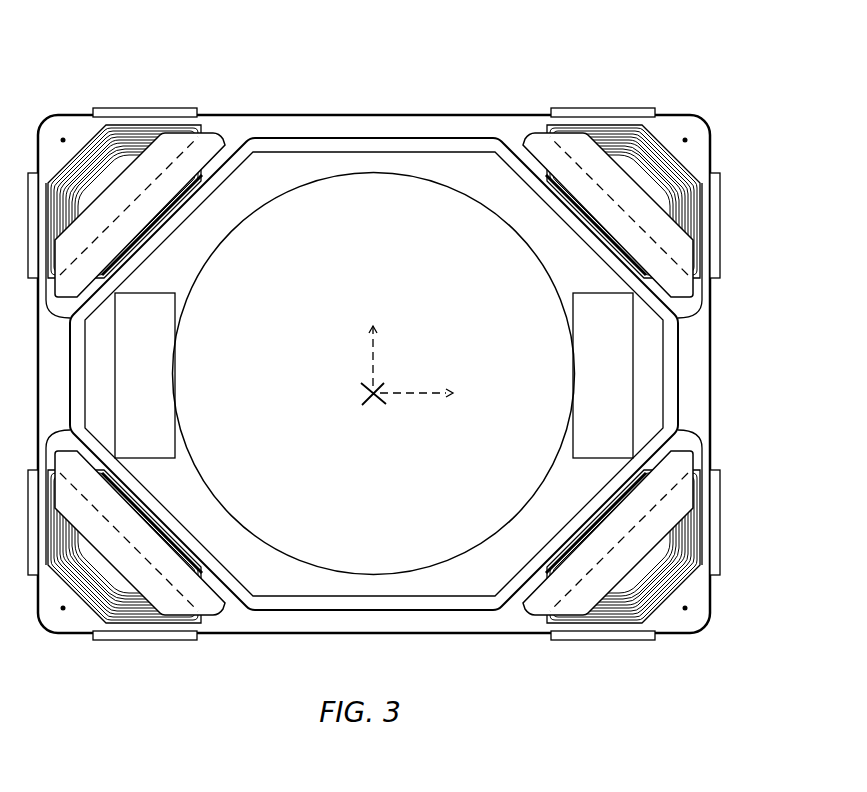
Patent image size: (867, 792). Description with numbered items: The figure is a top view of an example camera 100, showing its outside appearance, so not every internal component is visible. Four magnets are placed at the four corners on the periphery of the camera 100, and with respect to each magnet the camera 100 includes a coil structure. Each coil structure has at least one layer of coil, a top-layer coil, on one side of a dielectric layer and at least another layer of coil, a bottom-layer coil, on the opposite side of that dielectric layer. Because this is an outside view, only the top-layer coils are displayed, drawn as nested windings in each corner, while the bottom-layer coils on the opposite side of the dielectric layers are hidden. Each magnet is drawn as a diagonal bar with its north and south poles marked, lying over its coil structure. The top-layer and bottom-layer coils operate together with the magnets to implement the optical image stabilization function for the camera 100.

The camera 100 is at (743, 30).